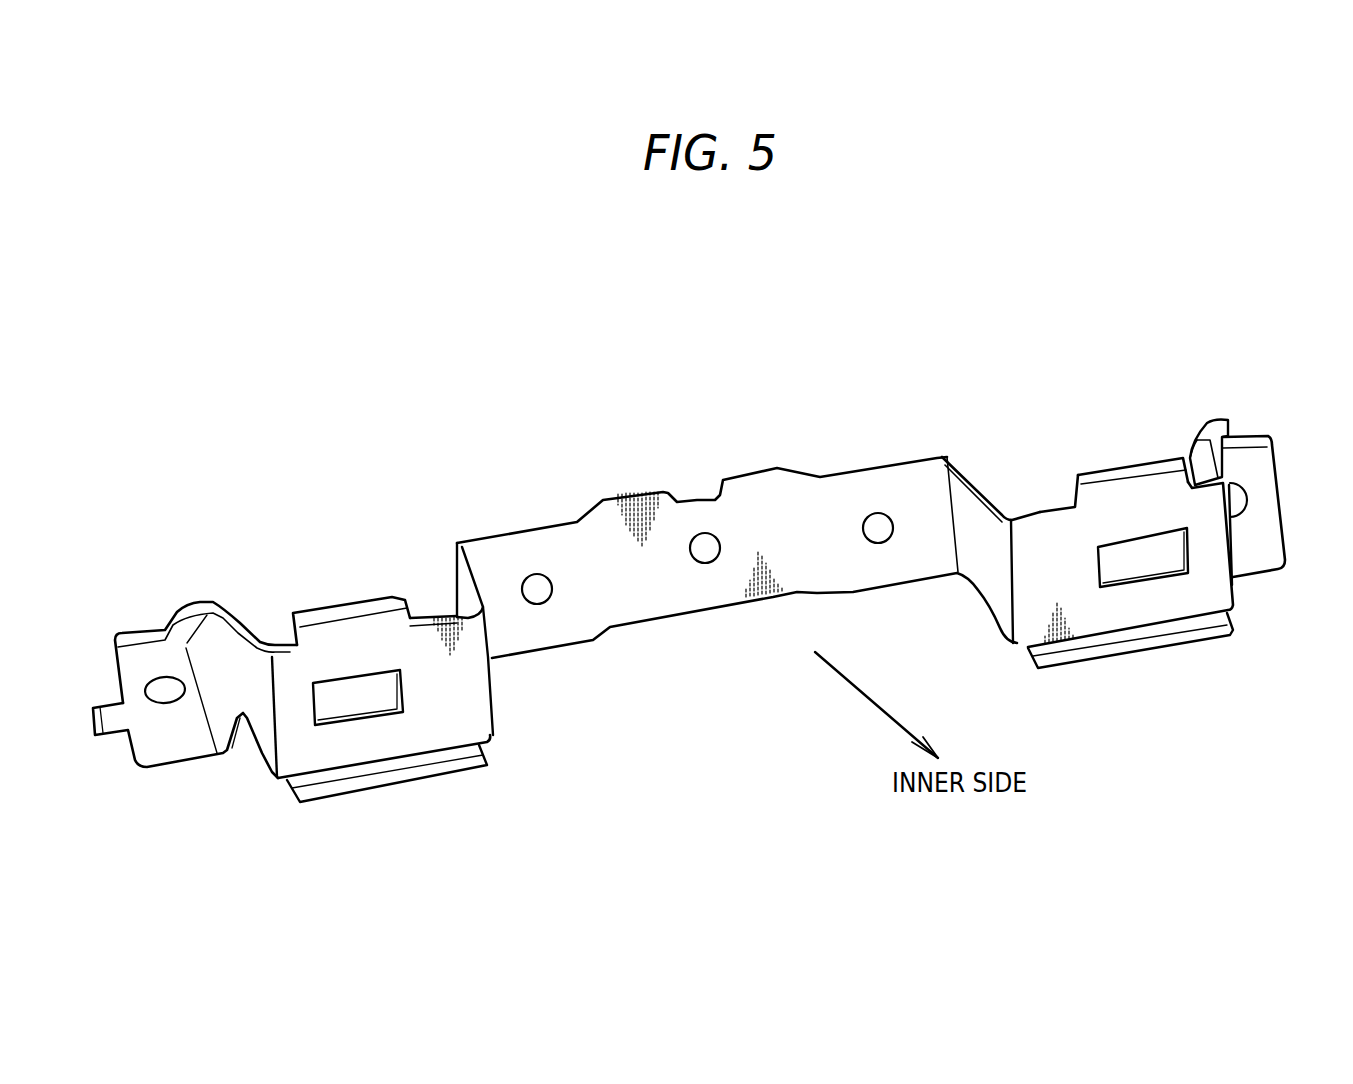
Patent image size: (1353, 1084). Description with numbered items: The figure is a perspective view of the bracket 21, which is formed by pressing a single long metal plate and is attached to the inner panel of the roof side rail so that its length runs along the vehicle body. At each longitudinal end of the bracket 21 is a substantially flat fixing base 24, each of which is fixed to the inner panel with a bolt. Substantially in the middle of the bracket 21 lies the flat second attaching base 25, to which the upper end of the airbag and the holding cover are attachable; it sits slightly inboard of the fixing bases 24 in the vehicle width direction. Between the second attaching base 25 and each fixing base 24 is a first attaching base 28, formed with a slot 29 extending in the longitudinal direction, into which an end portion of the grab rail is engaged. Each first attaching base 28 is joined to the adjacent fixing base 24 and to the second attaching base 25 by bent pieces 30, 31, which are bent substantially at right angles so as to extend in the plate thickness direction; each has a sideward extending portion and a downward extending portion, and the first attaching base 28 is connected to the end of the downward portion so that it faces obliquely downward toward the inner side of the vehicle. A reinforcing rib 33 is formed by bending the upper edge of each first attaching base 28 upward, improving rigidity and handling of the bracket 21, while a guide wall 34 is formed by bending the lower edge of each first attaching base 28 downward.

The bracket 21 is at (893, 405).
The fixing base 24 is at (140, 663).
The second attaching base 25 is at (521, 545).
The first attaching base 28 is at (287, 670).
The slot 29 is at (352, 720).
The bent piece 30 is at (247, 687).
The bent piece 31 is at (461, 580).
The reinforcing rib 33 is at (349, 613).
The guide wall 34 is at (437, 762).